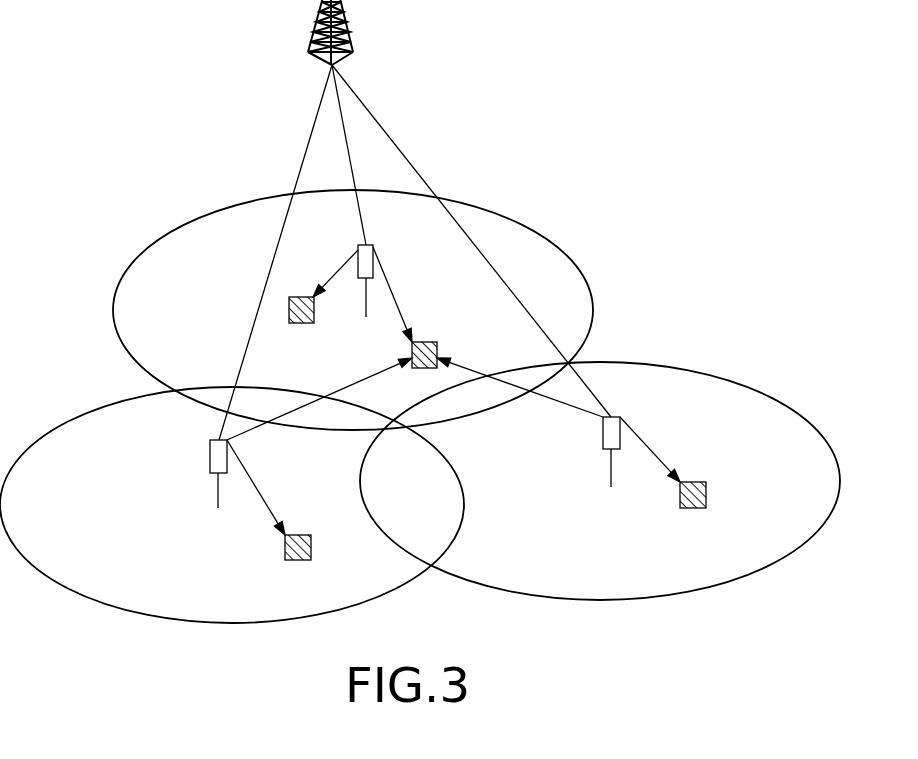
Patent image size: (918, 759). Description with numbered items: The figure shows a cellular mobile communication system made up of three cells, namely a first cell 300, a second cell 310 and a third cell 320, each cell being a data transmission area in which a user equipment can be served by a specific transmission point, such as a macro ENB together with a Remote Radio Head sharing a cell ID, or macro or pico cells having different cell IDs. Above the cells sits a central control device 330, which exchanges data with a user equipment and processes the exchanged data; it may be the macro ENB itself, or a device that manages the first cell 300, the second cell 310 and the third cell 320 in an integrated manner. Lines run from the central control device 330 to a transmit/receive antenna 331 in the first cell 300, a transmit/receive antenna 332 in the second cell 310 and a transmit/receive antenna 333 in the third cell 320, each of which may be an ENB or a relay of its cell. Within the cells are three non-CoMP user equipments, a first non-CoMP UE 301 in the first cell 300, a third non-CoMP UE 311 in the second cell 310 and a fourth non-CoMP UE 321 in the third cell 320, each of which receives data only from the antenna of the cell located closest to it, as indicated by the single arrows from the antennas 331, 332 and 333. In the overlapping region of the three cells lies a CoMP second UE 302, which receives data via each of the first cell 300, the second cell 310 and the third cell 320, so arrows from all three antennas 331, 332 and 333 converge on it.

The cell#1 300 is at (500, 215).
The cell#2 310 is at (93, 403).
The cell#3 320 is at (648, 362).
The central control device 330 is at (352, 11).
The transmit/receive antenna 331 is at (374, 247).
The transmit/receive antenna 332 is at (210, 459).
The transmit/receive antenna 333 is at (603, 435).
The non-CoMP UE#1 301 is at (299, 296).
The CoMP UE#2 302 is at (421, 341).
The non-CoMP UE#3 311 is at (296, 534).
The non-CoMP UE#4 321 is at (693, 482).